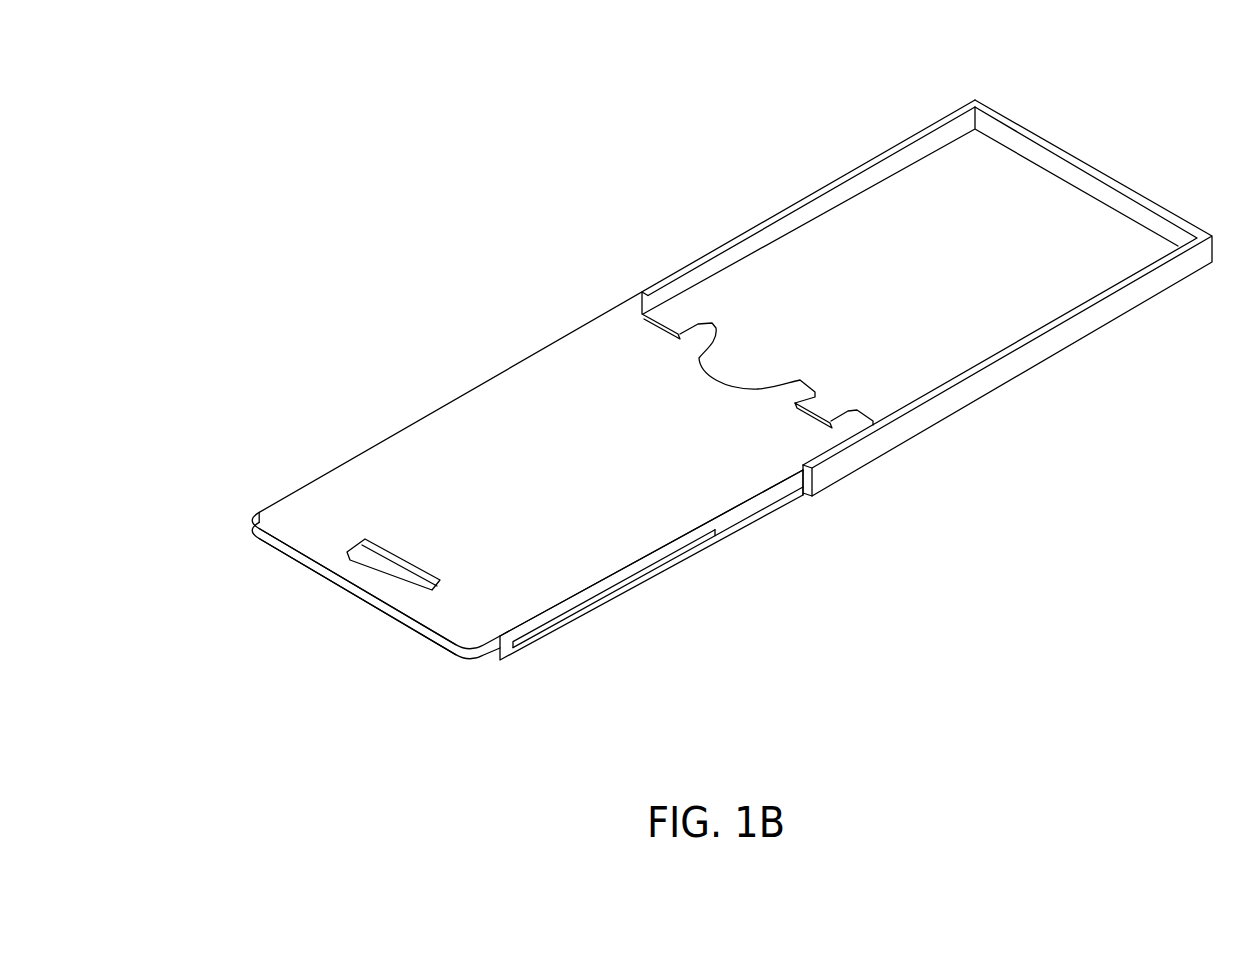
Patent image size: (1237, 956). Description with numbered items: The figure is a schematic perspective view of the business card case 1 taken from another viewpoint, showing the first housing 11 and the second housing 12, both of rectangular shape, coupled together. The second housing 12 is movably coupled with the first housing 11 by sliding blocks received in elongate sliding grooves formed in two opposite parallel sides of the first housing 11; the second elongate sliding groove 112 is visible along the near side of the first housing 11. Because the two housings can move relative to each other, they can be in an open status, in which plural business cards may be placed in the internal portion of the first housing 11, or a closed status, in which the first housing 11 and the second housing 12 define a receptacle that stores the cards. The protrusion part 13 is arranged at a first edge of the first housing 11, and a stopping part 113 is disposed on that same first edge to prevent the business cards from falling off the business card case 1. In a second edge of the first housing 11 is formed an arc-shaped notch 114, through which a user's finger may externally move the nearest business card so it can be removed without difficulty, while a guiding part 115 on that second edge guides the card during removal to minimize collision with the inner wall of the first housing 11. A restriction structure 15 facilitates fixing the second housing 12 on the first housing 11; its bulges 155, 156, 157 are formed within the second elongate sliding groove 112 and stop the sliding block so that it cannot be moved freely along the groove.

The business card case 1 is at (278, 127).
The first housing 11 is at (540, 403).
The second housing 12 is at (1028, 187).
The protrusion part 13 is at (300, 537).
The restriction structure 15 is at (683, 525).
The second elongate sliding groove 112 is at (608, 590).
The stopping part 113 is at (392, 573).
The arc-shaped notch 114 is at (700, 380).
The guiding part 115 is at (677, 323).
The bulge 155 is at (680, 550).
The bulge 156 is at (695, 532).
The bulge 157 is at (715, 527).